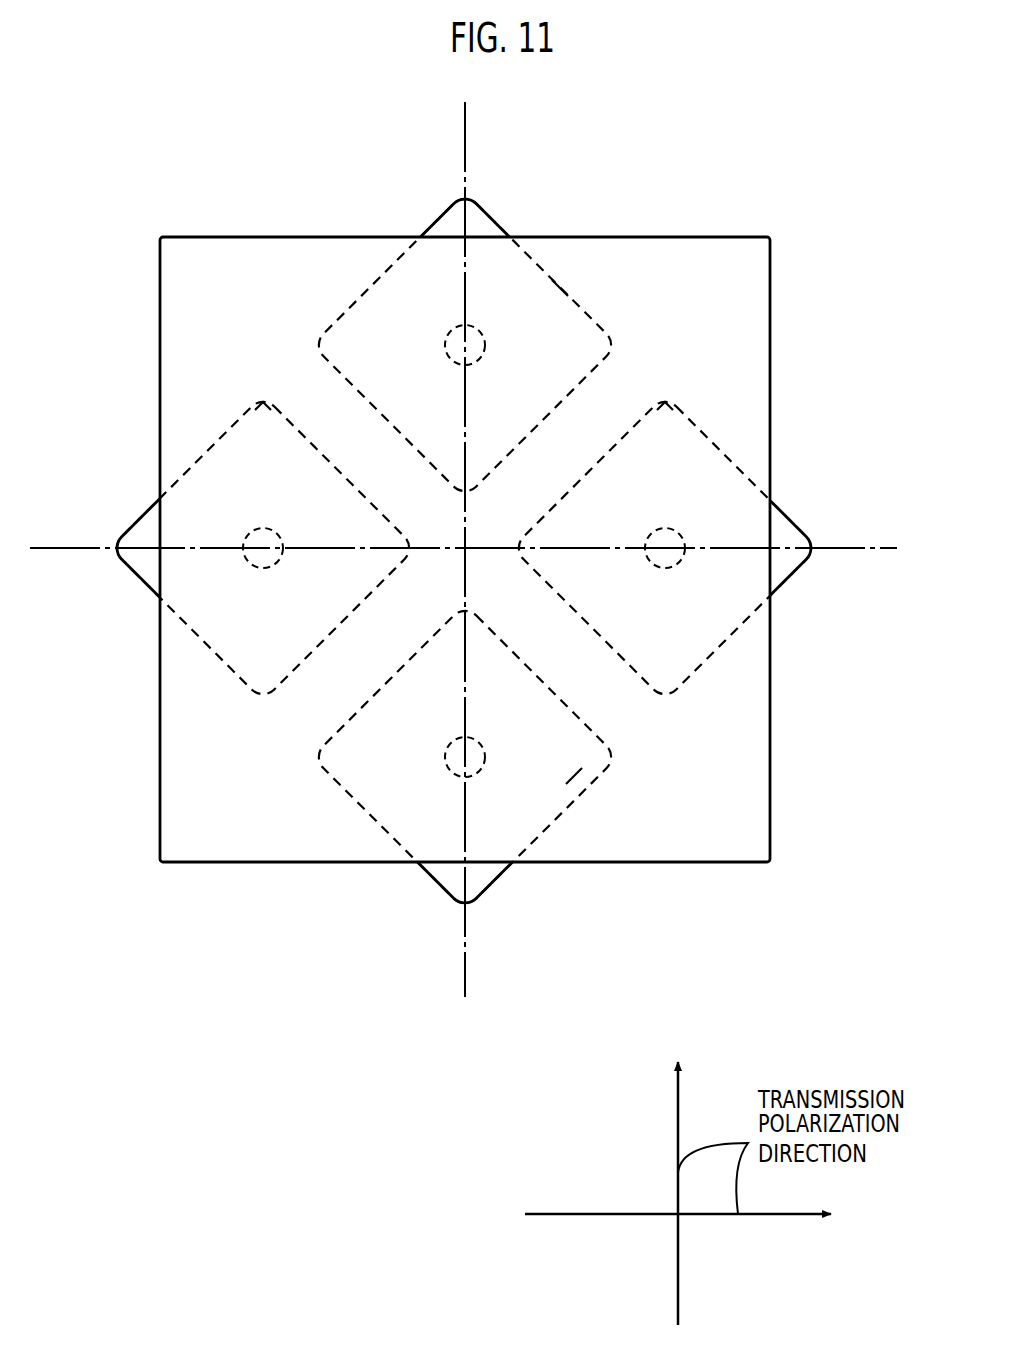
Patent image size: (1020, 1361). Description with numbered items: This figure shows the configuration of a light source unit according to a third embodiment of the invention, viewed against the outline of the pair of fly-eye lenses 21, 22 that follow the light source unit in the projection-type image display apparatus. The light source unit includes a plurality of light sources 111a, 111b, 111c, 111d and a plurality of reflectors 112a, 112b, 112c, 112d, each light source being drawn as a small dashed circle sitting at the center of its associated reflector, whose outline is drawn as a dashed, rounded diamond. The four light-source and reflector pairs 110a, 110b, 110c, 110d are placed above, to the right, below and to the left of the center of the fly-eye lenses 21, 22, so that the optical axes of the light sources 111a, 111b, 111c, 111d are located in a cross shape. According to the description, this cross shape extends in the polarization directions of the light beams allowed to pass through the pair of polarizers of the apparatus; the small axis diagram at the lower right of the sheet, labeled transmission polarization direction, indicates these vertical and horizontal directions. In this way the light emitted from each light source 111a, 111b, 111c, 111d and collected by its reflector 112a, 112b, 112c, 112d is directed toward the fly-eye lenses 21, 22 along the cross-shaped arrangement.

The fly-eye lens 21 is at (465, 514).
The fly-eye lens 22 is at (700, 237).
The light source unit 110a is at (548, 262).
The polarization region 110b is at (720, 442).
The polarization region 110c is at (561, 817).
The polarization region 110d is at (215, 436).
The light source 111a is at (487, 346).
The light source 111b is at (677, 531).
The light source 111c is at (486, 759).
The light source 111d is at (271, 529).
The reflector 112a is at (562, 288).
The reflector 112b is at (665, 402).
The reflector 112c is at (573, 777).
The reflector 112d is at (264, 401).